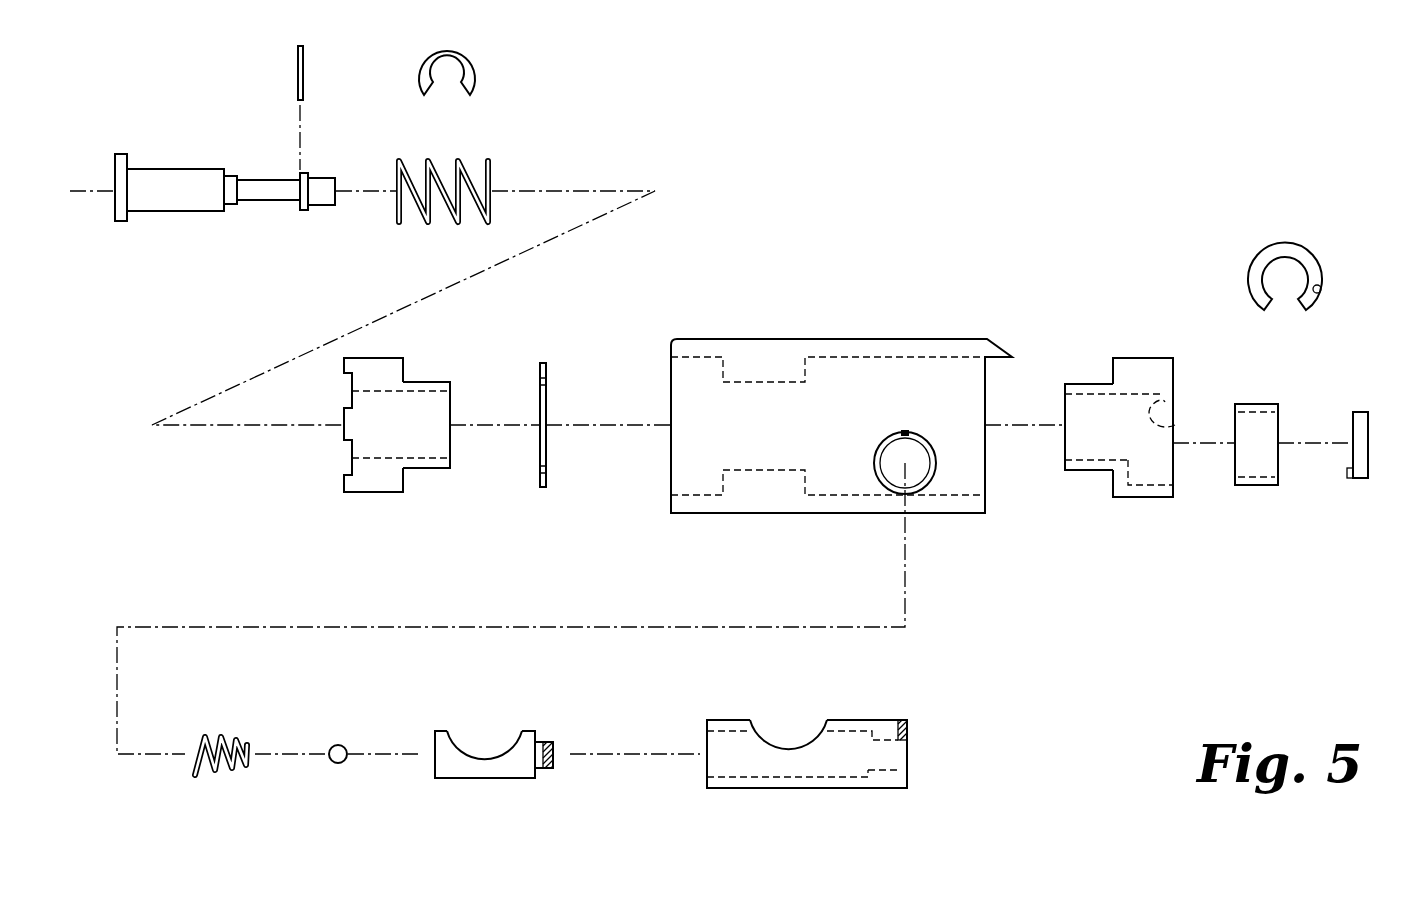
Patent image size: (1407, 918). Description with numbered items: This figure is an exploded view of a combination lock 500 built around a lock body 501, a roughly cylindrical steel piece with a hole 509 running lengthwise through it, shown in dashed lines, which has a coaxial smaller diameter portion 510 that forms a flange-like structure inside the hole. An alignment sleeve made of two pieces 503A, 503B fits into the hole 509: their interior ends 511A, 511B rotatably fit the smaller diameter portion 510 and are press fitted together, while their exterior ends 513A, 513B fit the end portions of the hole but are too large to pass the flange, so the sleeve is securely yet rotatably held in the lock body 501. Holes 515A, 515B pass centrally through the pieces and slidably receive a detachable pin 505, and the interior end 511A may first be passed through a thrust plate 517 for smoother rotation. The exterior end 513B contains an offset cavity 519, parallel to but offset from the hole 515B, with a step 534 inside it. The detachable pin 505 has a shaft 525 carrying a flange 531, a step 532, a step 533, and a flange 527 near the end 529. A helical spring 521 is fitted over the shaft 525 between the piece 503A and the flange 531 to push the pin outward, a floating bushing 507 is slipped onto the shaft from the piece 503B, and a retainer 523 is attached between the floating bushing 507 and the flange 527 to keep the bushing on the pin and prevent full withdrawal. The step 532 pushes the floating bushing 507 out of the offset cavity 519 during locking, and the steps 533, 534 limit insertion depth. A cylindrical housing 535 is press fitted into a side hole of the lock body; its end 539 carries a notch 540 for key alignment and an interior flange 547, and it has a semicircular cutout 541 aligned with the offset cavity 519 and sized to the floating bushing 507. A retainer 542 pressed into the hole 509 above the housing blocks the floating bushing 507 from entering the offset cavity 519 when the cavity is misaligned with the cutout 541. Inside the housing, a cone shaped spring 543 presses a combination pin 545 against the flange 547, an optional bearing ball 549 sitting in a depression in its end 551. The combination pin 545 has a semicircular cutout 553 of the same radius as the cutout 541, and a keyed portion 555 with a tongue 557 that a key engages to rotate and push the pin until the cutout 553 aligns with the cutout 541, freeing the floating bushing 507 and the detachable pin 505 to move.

The combination lock 500 is at (792, 222).
The lock body 501 is at (803, 339).
The alignment sleeve piece 503A is at (369, 461).
The alignment sleeve piece 503B is at (1135, 433).
The detachable pin 505 is at (344, 155).
The floating bushing 507 is at (1266, 404).
The hole 509 is at (690, 412).
The smaller diameter portion 510 is at (760, 448).
The interior end 511A is at (433, 470).
The interior end 511B is at (1100, 471).
The exterior end 513A is at (358, 493).
The exterior end 513B is at (1143, 358).
The hole 515A is at (397, 435).
The hole 515B is at (1078, 407).
The thrust plate 517 is at (545, 363).
The offset cavity 519 is at (1163, 469).
The helical spring 521 is at (493, 173).
The retainer 523 is at (415, 76).
The shaft 525 is at (192, 197).
The flange 527 is at (307, 173).
The end 529 is at (323, 205).
The flange 531 is at (125, 154).
The step 532 is at (237, 205).
The step 533 is at (235, 213).
The step 534 is at (1175, 425).
The cylindrical housing 535 is at (852, 766).
The end 539 is at (907, 777).
The notch 540 is at (907, 731).
The semicircular cutout 541 is at (783, 748).
The retainer 542 is at (1320, 292).
The cone shaped spring 543 is at (213, 776).
The combination pin 545 is at (496, 775).
The interior flange 547 is at (860, 778).
The bearing ball 549 is at (338, 745).
The end 551 is at (435, 770).
The semicircular cutout 553 is at (467, 755).
The keyed portion 555 is at (541, 770).
The tongue 557 is at (555, 750).